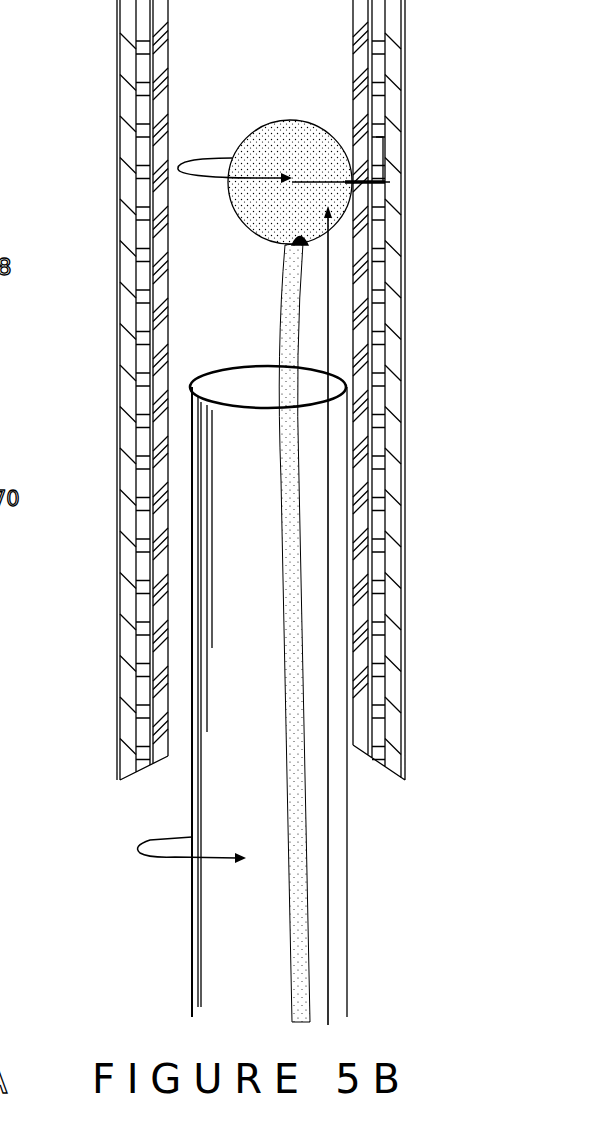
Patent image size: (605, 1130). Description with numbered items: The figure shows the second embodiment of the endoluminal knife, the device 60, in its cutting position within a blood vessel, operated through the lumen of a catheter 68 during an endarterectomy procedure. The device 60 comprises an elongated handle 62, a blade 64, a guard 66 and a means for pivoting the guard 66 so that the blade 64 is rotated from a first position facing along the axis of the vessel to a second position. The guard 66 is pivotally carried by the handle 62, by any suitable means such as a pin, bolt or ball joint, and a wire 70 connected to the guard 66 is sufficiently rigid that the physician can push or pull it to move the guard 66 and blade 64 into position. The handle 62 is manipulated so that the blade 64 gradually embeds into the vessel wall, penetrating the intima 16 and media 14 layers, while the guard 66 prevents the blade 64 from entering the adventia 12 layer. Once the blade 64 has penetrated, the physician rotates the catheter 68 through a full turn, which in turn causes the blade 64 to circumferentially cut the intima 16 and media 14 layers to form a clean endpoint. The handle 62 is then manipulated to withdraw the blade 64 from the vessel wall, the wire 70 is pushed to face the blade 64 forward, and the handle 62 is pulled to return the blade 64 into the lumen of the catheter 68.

The device 60 is at (70, 93).
The adventia layer 12 is at (127, 778).
The media layer 14 is at (150, 773).
The intima layer 16 is at (163, 777).
The elongated handle 62 is at (298, 428).
The blade 64 is at (384, 140).
The guard 66 is at (311, 150).
The catheter 68 is at (348, 793).
The wire 70 is at (328, 527).